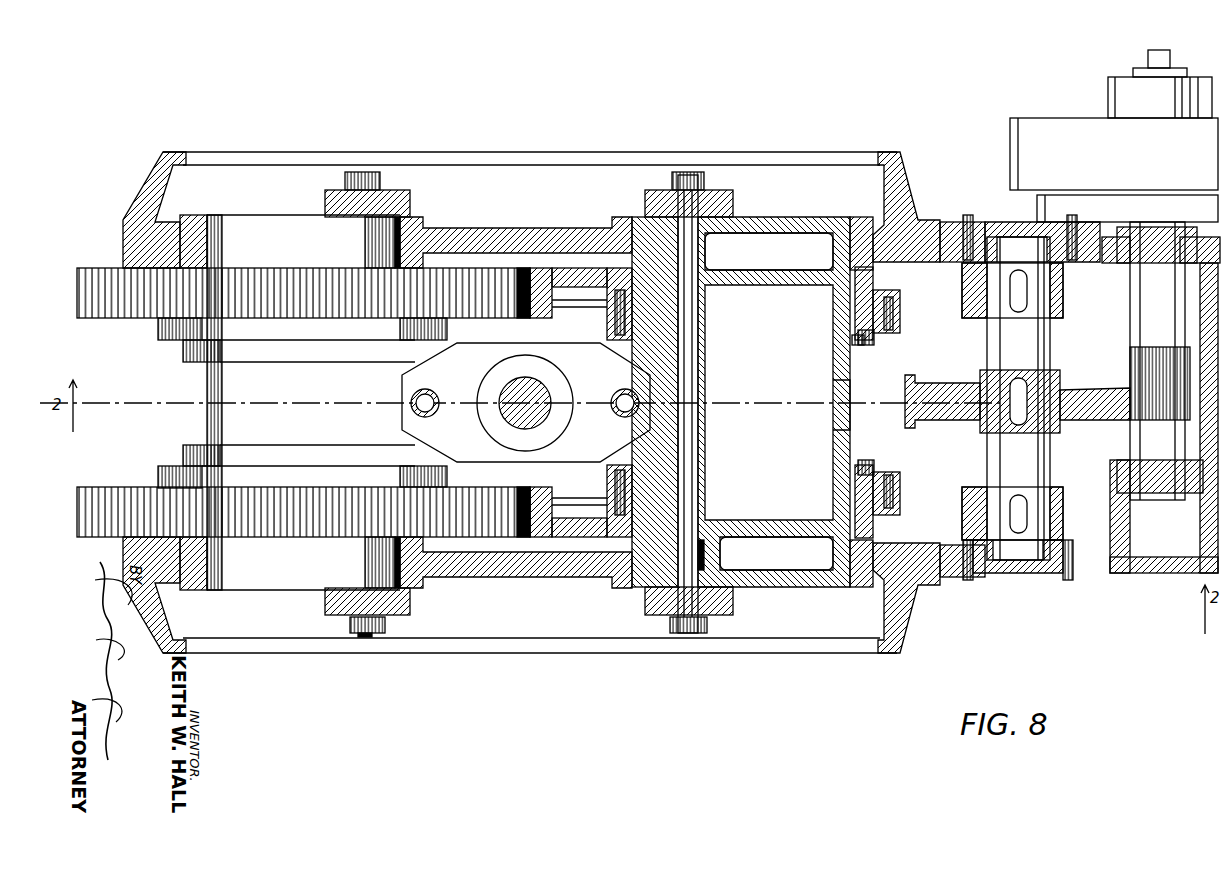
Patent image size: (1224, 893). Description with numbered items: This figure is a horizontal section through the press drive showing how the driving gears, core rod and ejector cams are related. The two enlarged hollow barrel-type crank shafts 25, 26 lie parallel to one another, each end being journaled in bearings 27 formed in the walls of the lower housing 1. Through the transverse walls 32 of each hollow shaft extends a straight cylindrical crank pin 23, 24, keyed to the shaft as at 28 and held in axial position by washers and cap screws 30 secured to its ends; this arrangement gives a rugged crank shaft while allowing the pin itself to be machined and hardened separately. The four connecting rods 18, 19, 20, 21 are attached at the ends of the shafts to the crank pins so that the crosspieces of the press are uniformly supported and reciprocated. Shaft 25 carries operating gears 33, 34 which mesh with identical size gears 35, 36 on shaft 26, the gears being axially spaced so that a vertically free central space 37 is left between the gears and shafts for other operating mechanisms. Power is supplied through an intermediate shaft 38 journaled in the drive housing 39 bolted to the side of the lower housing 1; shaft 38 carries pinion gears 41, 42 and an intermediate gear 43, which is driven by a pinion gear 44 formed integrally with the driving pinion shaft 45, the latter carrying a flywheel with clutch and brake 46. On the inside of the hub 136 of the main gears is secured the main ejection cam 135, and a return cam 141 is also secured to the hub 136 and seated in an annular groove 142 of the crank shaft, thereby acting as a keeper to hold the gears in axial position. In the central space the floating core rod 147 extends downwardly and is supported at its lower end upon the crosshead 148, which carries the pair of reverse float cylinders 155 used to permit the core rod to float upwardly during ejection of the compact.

The lower housing 1 is at (893, 183).
The connecting rod 18 is at (645, 600).
The connecting rod 19 is at (410, 603).
The connecting rod 20 is at (410, 203).
The connecting rod 21 is at (645, 201).
The crank pin 23 is at (366, 636).
The crank pin 24 is at (700, 461).
The hollow shaft 25 is at (849, 424).
The hollow shaft 26 is at (212, 414).
The bearing 27 is at (856, 218).
The key 28 is at (704, 553).
The cap screw 30 is at (343, 180).
The transverse wall 32 is at (773, 233).
The operating gear 33 is at (585, 300).
The operating gear 34 is at (543, 492).
The gear 35 is at (487, 490).
The gear 36 is at (518, 306).
The central space 37 is at (478, 320).
The intermediate shaft 38 is at (1040, 465).
The drive housing 39 is at (957, 213).
The pinion gear 41 is at (1063, 297).
The pinion gear 42 is at (1063, 512).
The intermediate gear 43 is at (944, 392).
The pinion gear 44 is at (1140, 370).
The shaft 45 is at (1150, 306).
The flywheel 46 is at (1085, 116).
The main ejection cam 135 is at (160, 327).
The hub 136 is at (858, 305).
The return cam 141 is at (186, 352).
The annular groove 142 is at (852, 343).
The floating core rod 147 is at (508, 408).
The crosshead 148 is at (540, 458).
The reverse float cylinder 155 is at (460, 378).